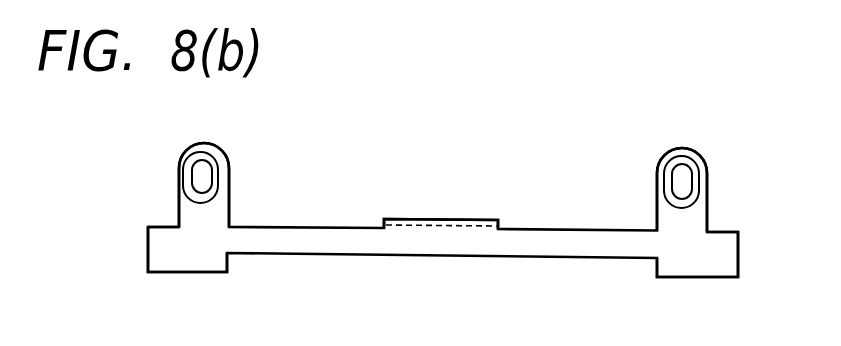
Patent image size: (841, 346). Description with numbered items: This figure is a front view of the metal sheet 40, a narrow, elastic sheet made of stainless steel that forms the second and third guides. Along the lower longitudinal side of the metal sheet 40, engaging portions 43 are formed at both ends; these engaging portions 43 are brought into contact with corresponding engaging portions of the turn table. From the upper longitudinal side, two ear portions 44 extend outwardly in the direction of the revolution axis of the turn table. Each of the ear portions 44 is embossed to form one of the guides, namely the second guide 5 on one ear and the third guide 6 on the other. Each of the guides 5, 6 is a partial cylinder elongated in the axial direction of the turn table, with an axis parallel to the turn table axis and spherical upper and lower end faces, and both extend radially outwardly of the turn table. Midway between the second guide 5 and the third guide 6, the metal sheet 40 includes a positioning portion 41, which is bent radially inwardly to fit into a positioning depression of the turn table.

The second guide 5 is at (197, 178).
The third guide 6 is at (688, 180).
The metal sheet 40 is at (584, 228).
The positioning portion 41 is at (474, 218).
The engaging portions 43 is at (193, 265).
The ear portions 44 is at (229, 168).